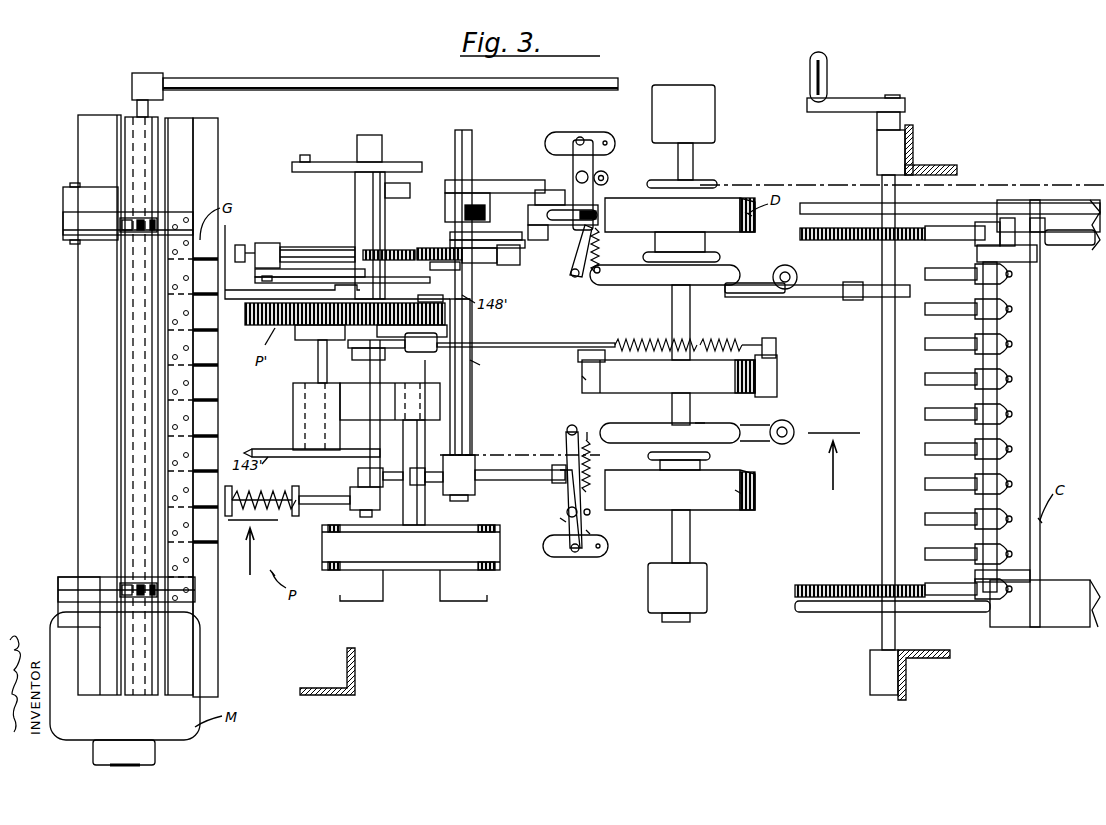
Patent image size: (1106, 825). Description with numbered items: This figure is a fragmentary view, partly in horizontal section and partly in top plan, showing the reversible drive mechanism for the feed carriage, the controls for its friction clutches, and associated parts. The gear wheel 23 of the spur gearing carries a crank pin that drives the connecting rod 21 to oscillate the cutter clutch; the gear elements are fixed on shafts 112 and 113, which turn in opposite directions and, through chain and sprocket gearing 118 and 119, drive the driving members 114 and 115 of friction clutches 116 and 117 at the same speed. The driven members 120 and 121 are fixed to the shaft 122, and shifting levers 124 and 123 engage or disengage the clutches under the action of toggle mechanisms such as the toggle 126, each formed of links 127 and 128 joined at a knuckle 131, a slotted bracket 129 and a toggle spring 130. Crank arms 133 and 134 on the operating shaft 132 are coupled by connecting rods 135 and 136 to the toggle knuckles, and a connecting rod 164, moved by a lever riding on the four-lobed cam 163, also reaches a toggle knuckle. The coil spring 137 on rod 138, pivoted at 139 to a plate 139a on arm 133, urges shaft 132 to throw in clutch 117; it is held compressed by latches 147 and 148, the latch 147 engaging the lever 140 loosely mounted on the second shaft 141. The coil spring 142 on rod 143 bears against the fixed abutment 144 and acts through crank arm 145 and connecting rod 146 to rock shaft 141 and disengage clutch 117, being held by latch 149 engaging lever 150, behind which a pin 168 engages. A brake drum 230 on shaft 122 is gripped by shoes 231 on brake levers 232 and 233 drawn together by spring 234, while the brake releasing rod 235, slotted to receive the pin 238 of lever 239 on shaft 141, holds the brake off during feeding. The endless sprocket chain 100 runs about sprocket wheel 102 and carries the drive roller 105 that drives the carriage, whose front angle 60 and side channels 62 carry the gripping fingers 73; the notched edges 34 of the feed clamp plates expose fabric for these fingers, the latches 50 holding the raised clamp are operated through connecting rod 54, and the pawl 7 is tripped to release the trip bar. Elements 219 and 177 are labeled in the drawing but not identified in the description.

The notched edges 34 is at (203, 392).
The connecting rod 54 is at (372, 78).
The slide blocks 219 is at (68, 232).
The latches 50 is at (132, 232).
The connecting rod 21 is at (238, 296).
The latch 148 is at (345, 304).
The gear wheel 23 is at (258, 327).
The pin 238 is at (322, 345).
The operating lever 239 is at (440, 360).
The shaft 113 is at (325, 380).
The coil spring 142 is at (250, 490).
The rod 143 is at (350, 495).
The second shaft 141 is at (358, 472).
The abutment 144 is at (296, 527).
The crank arm 145 is at (411, 563).
The connecting rod 146 is at (430, 487).
The pawl 7 is at (544, 495).
The latch 149 is at (345, 162).
The lever 150 is at (382, 150).
The pin 168 is at (370, 190).
The lever 140 is at (240, 244).
The latch 147 is at (335, 245).
The coil spring 137 is at (402, 248).
The rod 138 is at (425, 270).
The plate 139a is at (505, 266).
The crank arm 133 is at (470, 270).
The four-lobed cam 163 is at (465, 172).
The connecting rod 164 is at (492, 195).
The pivotal connection 139 is at (485, 217).
The connecting rod 135 is at (554, 214).
The drive roller 105 is at (560, 185).
The slotted bracket 129 is at (597, 138).
The toggle link 127 is at (606, 170).
The pivotal connection 131 is at (575, 256).
The chain and sprocket gearing 119 is at (565, 275).
The toggle spring 130 is at (598, 275).
The operating shaft 132 is at (470, 322).
The shaft 112 is at (487, 360).
The chain and sprocket gearing 118 is at (478, 445).
The connecting rod 136 is at (538, 478).
The crank arm 134 is at (476, 482).
The toggle mechanism 126 is at (560, 520).
The toggle link 128 is at (590, 530).
The guide sprocket wheel 102 is at (700, 180).
The driving member 114 is at (666, 221).
The driven member 120 is at (680, 215).
The shifting lever 124 is at (665, 312).
The friction clutch 116 is at (735, 240).
The bar 177 is at (832, 285).
The endless sprocket chain 100 is at (850, 165).
The brake releasing rod 235 is at (556, 344).
The brake lever 232 is at (592, 357).
The spring 234 is at (712, 340).
The brake lever 233 is at (778, 345).
The brake drum 230 is at (679, 390).
The brake shoes 231 is at (583, 378).
The shifting lever 123 is at (697, 432).
The shaft 122 is at (700, 423).
The driving member 115 is at (679, 466).
The driven member 121 is at (680, 490).
The friction clutch 117 is at (740, 492).
The front angle 60 is at (1038, 435).
The side channels 62 is at (1042, 244).
The gripping fingers 73 is at (950, 487).